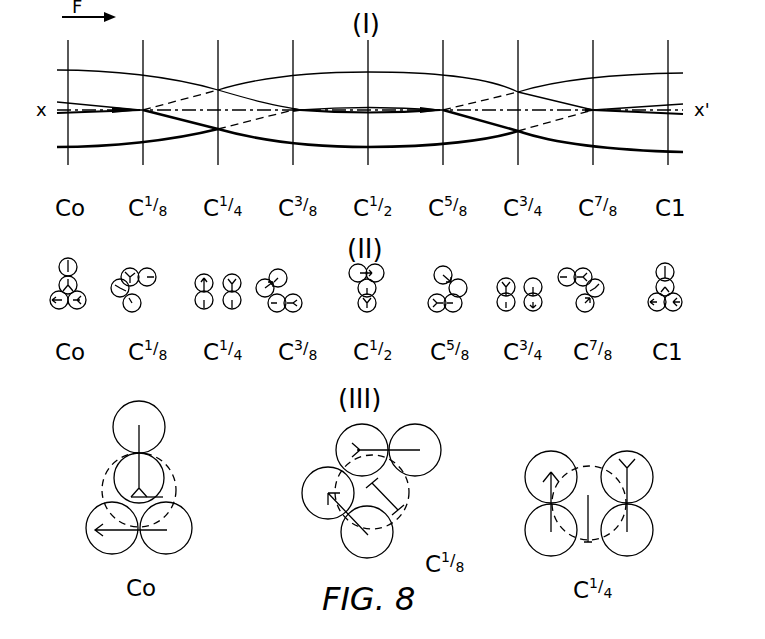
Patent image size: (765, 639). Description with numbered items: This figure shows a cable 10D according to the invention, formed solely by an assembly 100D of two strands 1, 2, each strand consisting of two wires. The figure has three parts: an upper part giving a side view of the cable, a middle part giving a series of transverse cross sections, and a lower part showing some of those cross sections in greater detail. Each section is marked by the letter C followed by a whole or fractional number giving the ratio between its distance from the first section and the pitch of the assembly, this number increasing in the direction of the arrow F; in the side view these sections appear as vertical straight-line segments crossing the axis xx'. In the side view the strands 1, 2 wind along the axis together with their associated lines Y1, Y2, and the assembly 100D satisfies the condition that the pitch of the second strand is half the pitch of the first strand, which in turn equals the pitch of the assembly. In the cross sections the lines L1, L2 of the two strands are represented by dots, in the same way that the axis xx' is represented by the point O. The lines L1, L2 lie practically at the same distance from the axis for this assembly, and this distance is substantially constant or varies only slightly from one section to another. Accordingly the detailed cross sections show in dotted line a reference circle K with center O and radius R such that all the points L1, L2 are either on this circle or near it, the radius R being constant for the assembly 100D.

The first strand 1 is at (95, 148).
The second strand 2 is at (116, 68).
The cable 10D is at (657, 64).
The assembly 100D is at (574, 78).
The reference circle K is at (176, 474).
The line L1 is at (327, 512).
The line L2 is at (389, 479).
The point O is at (352, 491).
The radius R is at (367, 509).
The line Y1 is at (132, 150).
The line Y2 is at (189, 78).